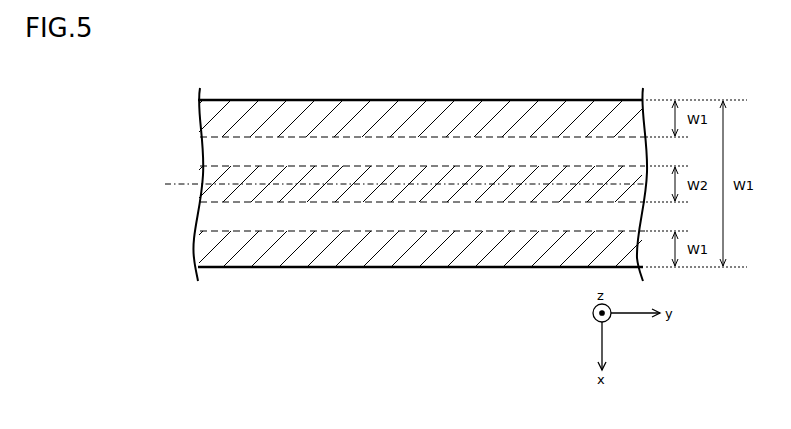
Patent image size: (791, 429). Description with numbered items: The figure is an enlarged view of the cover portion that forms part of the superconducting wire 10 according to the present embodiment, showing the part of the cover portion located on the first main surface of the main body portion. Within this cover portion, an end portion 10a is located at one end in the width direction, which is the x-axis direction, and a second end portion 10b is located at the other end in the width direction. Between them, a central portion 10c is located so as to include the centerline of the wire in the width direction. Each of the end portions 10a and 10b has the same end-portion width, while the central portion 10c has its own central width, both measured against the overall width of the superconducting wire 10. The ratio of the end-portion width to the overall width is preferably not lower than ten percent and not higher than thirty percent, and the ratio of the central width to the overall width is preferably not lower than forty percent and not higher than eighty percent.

The superconducting wire 10 is at (342, 83).
The end portion 10a is at (461, 107).
The end portion 10b is at (458, 253).
The central portion 10c is at (305, 195).